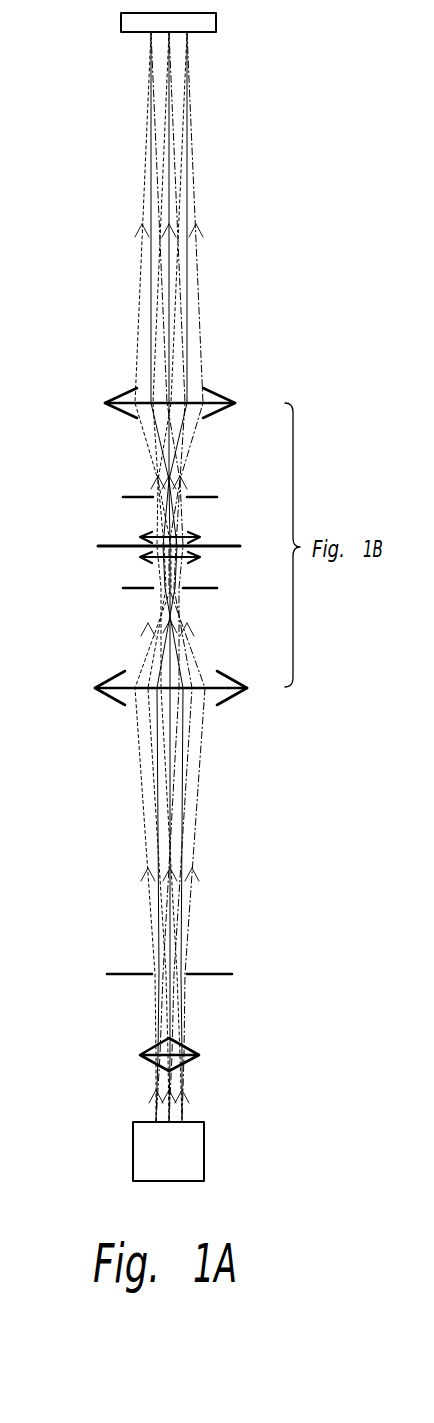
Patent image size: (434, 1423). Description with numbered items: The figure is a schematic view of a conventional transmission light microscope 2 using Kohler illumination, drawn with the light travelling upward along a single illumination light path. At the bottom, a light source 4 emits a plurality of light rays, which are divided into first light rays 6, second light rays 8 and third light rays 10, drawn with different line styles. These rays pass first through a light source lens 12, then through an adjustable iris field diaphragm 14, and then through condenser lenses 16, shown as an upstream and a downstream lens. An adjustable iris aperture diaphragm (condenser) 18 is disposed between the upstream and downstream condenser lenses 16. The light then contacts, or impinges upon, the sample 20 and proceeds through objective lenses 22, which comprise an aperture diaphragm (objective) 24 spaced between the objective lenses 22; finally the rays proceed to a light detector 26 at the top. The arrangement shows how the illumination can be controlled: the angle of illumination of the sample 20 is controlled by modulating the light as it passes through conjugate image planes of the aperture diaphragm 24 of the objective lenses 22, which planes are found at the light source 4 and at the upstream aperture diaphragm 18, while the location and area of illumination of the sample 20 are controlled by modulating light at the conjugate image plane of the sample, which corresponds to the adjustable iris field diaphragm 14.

The microscope 2 is at (255, 124).
The light source 4 is at (133, 1155).
The first light rays 6 is at (198, 782).
The second light rays 8 is at (157, 735).
The third light rays 10 is at (135, 715).
The light source lens 12 is at (146, 1052).
The adjustable iris field diaphragm 14 is at (220, 974).
The condenser lenses 16 is at (142, 557).
The adjustable iris aperture diaphragm (condenser) 18 is at (205, 588).
The sample 20 is at (112, 548).
The objective lenses 22 is at (142, 537).
The aperture diaphragm (objective) 24 is at (205, 497).
The light detector 26 is at (127, 32).